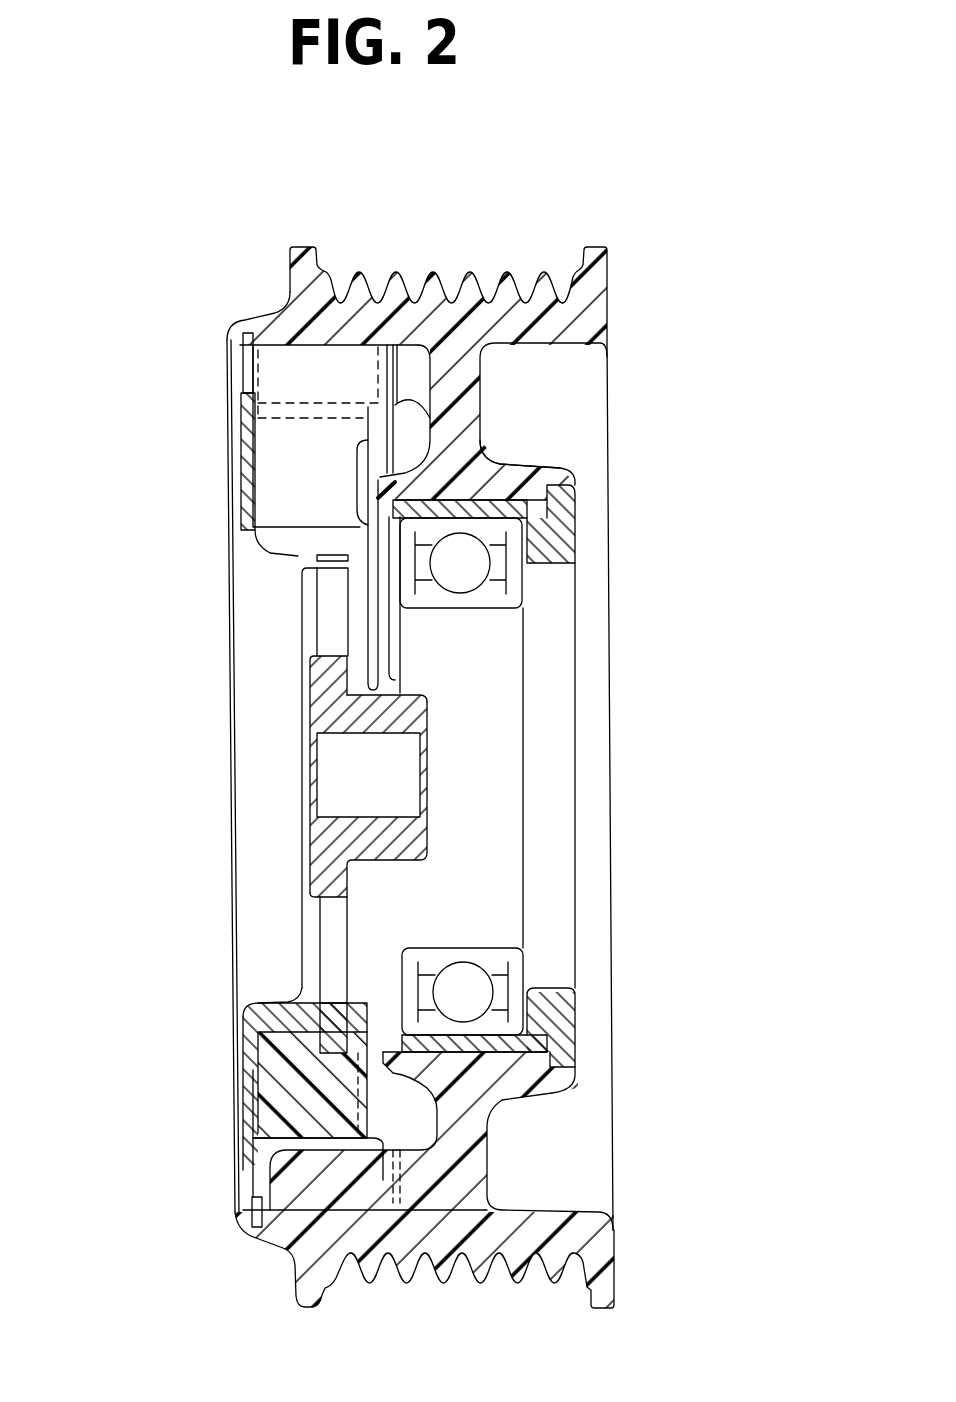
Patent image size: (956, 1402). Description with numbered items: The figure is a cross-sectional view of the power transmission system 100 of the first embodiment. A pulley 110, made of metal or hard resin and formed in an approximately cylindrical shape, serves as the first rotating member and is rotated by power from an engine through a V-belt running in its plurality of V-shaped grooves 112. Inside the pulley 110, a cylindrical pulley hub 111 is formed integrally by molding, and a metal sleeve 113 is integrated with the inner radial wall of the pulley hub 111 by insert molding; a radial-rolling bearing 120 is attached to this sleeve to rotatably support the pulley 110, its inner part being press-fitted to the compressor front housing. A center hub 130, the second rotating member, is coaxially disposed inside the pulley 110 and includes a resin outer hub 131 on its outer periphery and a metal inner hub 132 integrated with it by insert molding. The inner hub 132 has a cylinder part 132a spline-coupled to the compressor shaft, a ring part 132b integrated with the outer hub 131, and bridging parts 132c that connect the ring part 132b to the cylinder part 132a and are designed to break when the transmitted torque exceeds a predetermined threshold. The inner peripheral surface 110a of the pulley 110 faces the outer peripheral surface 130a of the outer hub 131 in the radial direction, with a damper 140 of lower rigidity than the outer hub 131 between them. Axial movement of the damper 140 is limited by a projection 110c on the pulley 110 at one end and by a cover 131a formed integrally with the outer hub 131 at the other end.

The power transmission system 100 is at (639, 236).
The pulley 110 is at (590, 305).
The inner peripheral surface 110a is at (297, 358).
The projection 110c is at (405, 363).
The pulley hub 111 is at (560, 447).
The V-shaped grooves 112 is at (518, 268).
The metal sleeve 113 is at (556, 517).
The radial-rolling bearing 120 is at (525, 572).
The center hub 130 is at (290, 702).
The outer peripheral surface 130a is at (287, 525).
The outer hub 131 is at (227, 528).
The cover 131a is at (237, 424).
The inner hub 132 is at (305, 668).
The cylinder part 132a is at (410, 695).
The ring part 132b is at (242, 1022).
The bridging parts 132c is at (320, 950).
The damper 140 is at (342, 363).